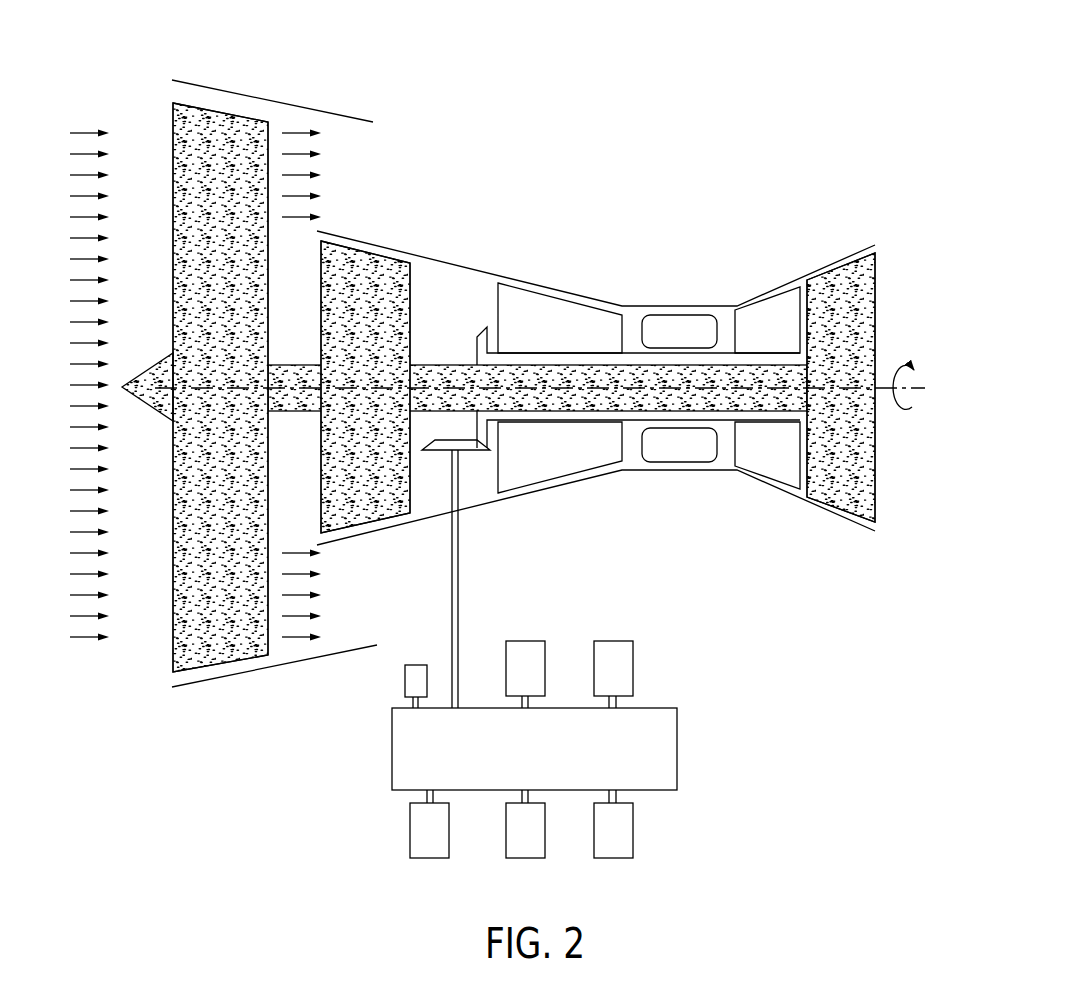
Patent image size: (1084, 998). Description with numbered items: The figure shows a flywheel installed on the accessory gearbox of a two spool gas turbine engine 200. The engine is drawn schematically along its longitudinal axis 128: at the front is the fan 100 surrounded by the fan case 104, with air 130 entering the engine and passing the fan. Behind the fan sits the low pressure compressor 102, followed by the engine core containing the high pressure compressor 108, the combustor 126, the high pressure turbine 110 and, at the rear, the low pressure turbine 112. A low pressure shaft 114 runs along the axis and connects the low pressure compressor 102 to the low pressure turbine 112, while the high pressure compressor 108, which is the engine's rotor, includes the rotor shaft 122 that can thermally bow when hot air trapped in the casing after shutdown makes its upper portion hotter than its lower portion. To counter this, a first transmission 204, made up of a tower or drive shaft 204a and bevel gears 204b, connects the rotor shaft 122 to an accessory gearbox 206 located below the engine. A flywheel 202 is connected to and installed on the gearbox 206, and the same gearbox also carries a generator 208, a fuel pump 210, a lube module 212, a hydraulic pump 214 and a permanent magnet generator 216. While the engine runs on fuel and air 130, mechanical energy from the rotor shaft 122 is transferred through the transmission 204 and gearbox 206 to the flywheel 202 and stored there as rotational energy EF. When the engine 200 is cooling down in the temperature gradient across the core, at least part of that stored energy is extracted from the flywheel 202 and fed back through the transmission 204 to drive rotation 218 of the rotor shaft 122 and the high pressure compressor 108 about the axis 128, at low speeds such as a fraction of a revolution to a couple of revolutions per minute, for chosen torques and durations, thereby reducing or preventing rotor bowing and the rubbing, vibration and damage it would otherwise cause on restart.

The fan 100 is at (253, 330).
The low pressure compressor 102 is at (371, 246).
The fan case 104 is at (263, 98).
The high pressure compressor 108 is at (553, 287).
The high pressure turbine 110 is at (778, 311).
The low pressure turbine 112 is at (857, 495).
The low pressure shaft 114 is at (565, 387).
The rotor shaft 122 is at (767, 352).
The combustor 126 is at (690, 469).
The longitudinal axis 128 is at (862, 396).
The air 130 is at (293, 155).
The gas turbine engine 200 is at (705, 97).
The flywheel 202 is at (545, 830).
The first transmission 204 is at (461, 534).
The tower shaft 204a is at (463, 550).
The bevel gears 204b is at (460, 437).
The accessory gearbox 206 is at (678, 752).
The generator 208 is at (410, 820).
The fuel pump 210 is at (633, 672).
The lube module 212 is at (545, 662).
The hydraulic pump 214 is at (633, 828).
The permanent magnet generator 216 is at (403, 683).
The rotation 218 is at (902, 360).
The rotational energy of the flywheel EF is at (506, 830).